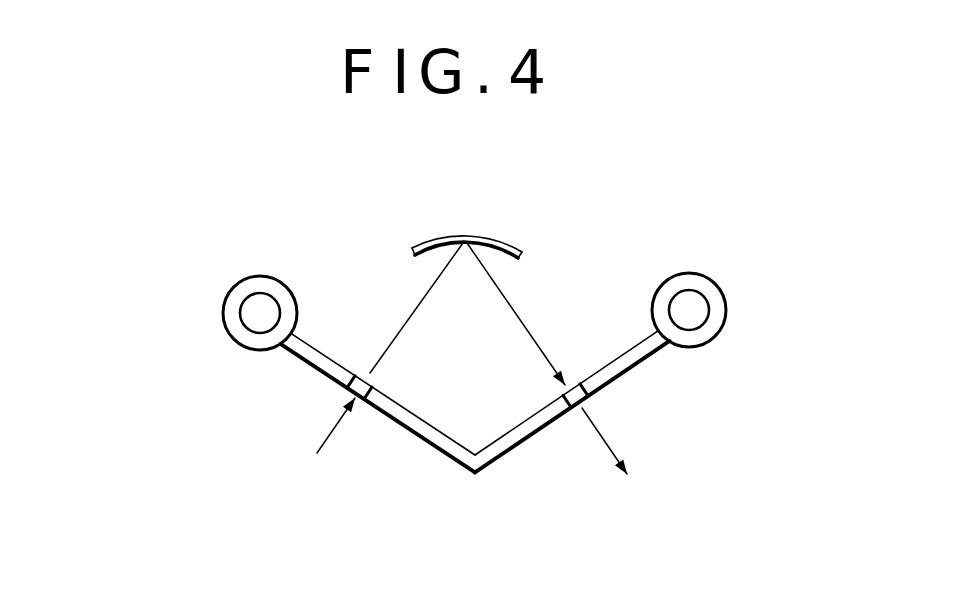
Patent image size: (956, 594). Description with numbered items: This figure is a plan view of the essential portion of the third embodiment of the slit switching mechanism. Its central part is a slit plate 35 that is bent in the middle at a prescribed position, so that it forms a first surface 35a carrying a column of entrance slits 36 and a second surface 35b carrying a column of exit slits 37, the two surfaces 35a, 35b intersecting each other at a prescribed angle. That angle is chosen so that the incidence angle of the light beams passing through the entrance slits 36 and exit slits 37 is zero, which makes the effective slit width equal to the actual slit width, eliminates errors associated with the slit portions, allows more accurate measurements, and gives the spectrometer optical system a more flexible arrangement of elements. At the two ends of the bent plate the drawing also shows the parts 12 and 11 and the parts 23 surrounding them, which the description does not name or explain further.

The pivot shaft 11 is at (693, 312).
The pivot shaft 12 is at (255, 312).
The roller 23 is at (258, 278).
The slit plate 35 is at (536, 433).
The first surface 35a is at (422, 440).
The second surface 35b is at (523, 440).
The entrance slits 36 is at (350, 393).
The exit slits 37 is at (582, 406).